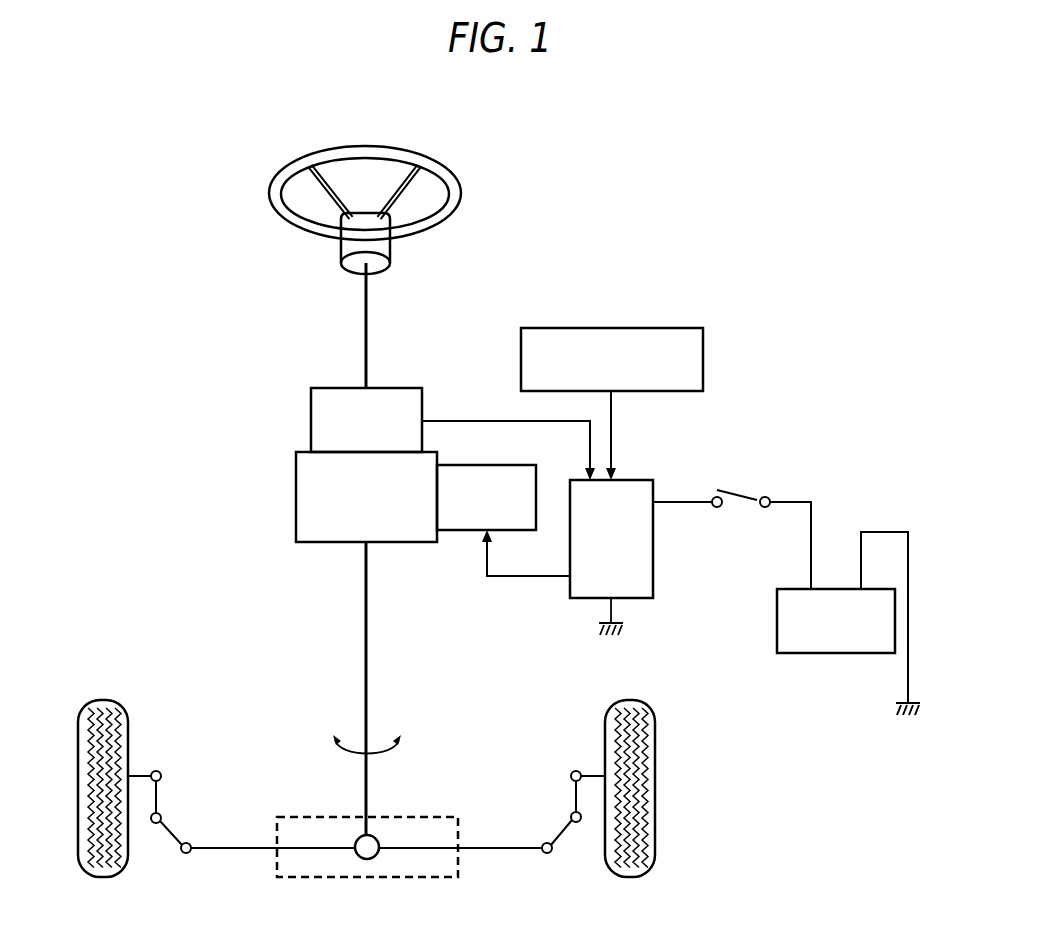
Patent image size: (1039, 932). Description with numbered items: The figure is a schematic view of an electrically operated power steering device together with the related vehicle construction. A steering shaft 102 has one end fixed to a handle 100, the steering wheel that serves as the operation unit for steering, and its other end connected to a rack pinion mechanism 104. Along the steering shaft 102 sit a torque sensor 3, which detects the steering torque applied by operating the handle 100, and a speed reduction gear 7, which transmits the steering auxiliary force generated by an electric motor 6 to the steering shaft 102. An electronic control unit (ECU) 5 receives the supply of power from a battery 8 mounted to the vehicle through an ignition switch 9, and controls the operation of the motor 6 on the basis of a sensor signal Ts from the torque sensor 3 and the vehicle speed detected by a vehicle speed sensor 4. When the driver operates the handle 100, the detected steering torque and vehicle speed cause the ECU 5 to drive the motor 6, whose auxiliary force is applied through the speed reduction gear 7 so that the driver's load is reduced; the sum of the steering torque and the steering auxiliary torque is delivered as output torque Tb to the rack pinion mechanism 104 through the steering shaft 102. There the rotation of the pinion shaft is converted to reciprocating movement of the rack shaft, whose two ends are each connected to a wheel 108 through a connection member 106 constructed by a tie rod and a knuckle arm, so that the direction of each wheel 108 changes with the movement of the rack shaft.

The handle (steering wheel) 100 is at (462, 193).
The steering shaft 102 is at (363, 632).
The torque sensor 3 is at (311, 421).
The vehicle speed sensor 4 is at (612, 327).
The electronic control unit (ECU) 5 is at (655, 537).
The electric motor 6 is at (487, 465).
The speed reduction gear 7 is at (296, 498).
The battery 8 is at (777, 622).
The ignition switch 9 is at (749, 482).
The rack pinion mechanism 104 is at (318, 818).
The connection member 106 is at (183, 821).
The wheel 108 is at (100, 700).